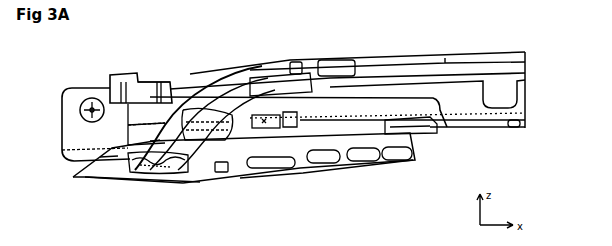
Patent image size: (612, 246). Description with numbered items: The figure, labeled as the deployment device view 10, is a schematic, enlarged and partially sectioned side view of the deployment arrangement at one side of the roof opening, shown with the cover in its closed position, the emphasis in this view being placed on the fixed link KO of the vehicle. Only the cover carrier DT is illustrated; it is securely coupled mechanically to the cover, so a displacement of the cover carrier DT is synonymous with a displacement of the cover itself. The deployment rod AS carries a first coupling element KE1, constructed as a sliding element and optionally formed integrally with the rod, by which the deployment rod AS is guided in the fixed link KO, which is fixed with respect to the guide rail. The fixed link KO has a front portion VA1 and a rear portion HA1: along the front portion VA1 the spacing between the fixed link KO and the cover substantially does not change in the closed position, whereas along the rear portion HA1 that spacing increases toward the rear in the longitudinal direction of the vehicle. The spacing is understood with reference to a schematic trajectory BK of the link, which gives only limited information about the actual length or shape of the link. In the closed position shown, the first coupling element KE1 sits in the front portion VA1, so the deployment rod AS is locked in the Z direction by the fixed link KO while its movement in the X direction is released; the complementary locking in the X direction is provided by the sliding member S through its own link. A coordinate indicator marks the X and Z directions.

The disc brake / caliper assembly 10 is at (489, 26).
The cover carrier DT is at (422, 54).
The deployment rod AS is at (478, 105).
The rear portion HA1 is at (430, 128).
The trajectory BK is at (38, 157).
The first coupling element KE1 is at (257, 123).
The front portion VA1 is at (291, 128).
The fixed link KO is at (332, 125).
The sliding member S is at (343, 163).